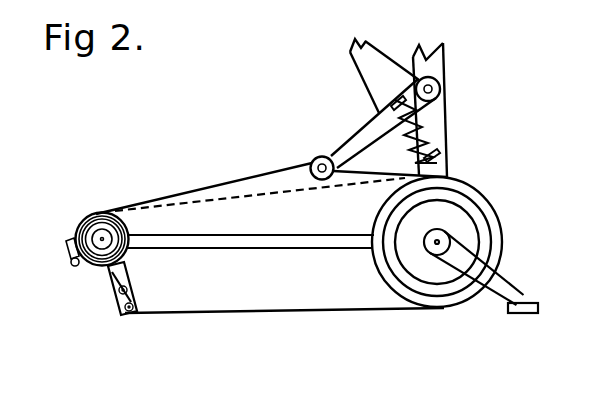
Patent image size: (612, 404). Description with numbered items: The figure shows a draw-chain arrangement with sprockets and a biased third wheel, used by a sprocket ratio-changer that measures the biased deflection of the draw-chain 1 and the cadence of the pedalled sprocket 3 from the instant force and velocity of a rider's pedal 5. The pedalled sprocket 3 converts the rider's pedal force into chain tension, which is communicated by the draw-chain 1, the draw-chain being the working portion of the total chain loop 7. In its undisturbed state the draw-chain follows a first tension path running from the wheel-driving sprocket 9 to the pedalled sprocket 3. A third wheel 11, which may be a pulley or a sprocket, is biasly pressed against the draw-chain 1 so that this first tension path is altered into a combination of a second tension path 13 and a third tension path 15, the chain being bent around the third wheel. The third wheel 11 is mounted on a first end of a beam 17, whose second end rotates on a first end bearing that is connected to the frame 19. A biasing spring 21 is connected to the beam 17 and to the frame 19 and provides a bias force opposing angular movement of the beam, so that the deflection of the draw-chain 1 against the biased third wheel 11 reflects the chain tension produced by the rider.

The draw-chain 1 is at (534, 301).
The pedalled sprocket 3 is at (471, 302).
The pedal 5 is at (341, 188).
The chain loop 7 is at (284, 313).
The wheel-driving sprocket 9 is at (128, 267).
The third wheel 11 is at (181, 189).
The second tension path 13 is at (290, 164).
The third tension path 15 is at (373, 158).
The beam 17 is at (370, 112).
The frame 19 is at (505, 73).
The biasing spring 21 is at (437, 143).